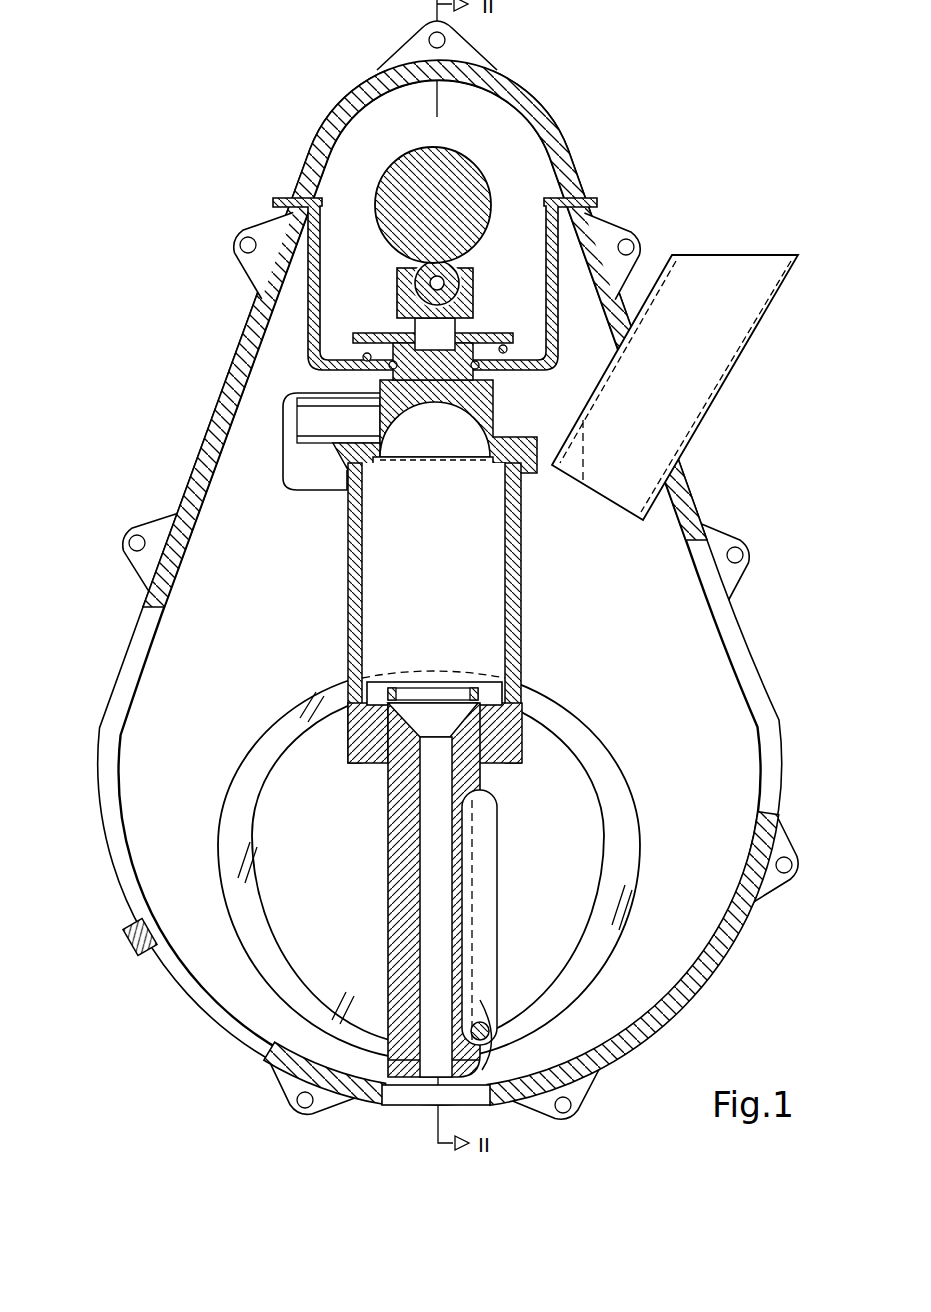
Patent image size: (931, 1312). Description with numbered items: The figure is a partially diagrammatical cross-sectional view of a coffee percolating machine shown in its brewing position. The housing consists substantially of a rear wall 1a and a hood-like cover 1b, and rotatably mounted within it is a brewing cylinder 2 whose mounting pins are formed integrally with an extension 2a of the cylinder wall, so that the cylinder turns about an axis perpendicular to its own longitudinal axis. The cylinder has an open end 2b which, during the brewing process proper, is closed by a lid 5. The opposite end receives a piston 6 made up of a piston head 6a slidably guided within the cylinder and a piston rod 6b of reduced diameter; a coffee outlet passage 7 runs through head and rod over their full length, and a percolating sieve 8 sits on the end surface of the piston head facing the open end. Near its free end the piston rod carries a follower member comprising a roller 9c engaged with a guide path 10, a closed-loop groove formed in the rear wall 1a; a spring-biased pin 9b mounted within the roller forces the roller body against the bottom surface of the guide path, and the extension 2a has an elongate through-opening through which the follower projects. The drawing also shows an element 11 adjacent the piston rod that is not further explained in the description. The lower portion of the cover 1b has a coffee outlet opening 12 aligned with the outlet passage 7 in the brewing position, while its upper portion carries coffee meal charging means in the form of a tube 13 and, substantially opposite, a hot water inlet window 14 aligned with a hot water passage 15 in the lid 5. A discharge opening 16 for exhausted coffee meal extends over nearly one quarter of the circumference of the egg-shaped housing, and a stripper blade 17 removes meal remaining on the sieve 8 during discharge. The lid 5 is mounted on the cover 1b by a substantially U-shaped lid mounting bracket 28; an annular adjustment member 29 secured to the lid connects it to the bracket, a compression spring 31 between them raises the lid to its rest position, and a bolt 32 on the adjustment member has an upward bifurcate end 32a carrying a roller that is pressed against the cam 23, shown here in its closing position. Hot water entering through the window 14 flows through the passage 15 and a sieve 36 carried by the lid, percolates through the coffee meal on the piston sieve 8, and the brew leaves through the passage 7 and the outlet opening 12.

The rear wall 1a is at (681, 951).
The hood-like cover 1b is at (760, 650).
The brewing cylinder 2 is at (347, 572).
The extension of the cylinder wall 2a is at (370, 790).
The open end 2b is at (385, 472).
The lid 5 is at (522, 400).
The piston 6 is at (381, 863).
The piston head 6a is at (515, 700).
The piston rod 6b is at (393, 957).
The coffee outlet passage 7 is at (388, 1060).
The percolating sieve 8 is at (474, 690).
The spring-biased pin 9b is at (523, 1013).
The roller 9c is at (507, 1043).
The guide path 10 is at (600, 778).
The channel 11 is at (490, 967).
The coffee outlet opening 12 is at (415, 1108).
The tube 13 is at (700, 355).
The hot water inlet window 14 is at (215, 413).
The hot water passage 15 is at (323, 420).
The discharge opening 16 is at (122, 850).
The stripper blade 17 is at (155, 942).
The cam 23 is at (450, 203).
The lid mounting bracket 28 is at (302, 250).
The annular adjustment member 29 is at (477, 332).
The compression spring 31 is at (510, 352).
The bolt 32 is at (440, 338).
The bifurcate end 32a is at (465, 296).
The sieve 36 is at (418, 456).